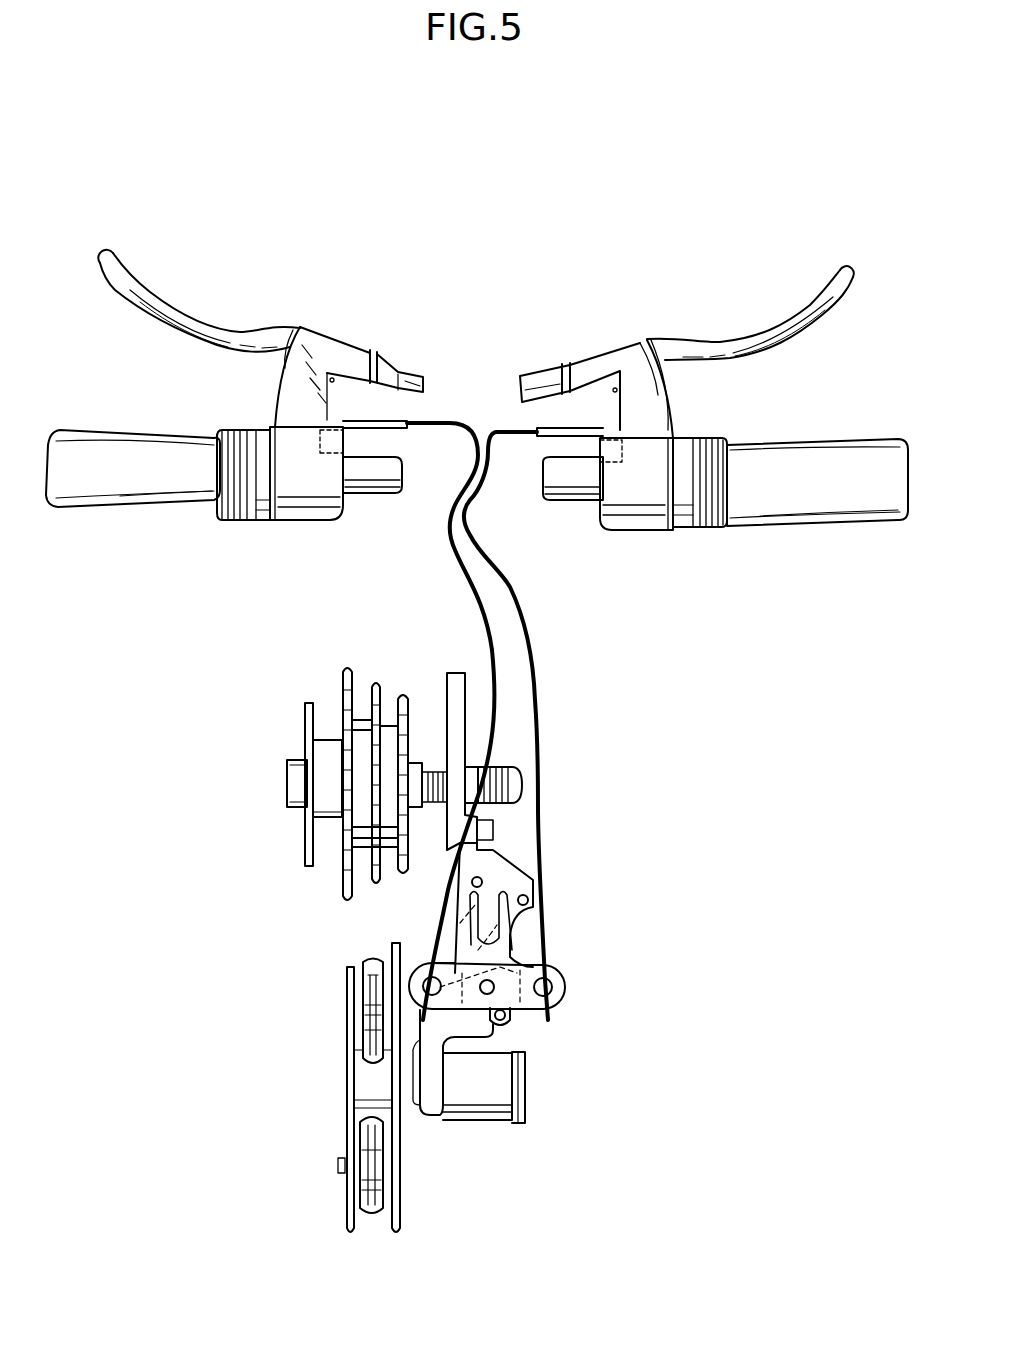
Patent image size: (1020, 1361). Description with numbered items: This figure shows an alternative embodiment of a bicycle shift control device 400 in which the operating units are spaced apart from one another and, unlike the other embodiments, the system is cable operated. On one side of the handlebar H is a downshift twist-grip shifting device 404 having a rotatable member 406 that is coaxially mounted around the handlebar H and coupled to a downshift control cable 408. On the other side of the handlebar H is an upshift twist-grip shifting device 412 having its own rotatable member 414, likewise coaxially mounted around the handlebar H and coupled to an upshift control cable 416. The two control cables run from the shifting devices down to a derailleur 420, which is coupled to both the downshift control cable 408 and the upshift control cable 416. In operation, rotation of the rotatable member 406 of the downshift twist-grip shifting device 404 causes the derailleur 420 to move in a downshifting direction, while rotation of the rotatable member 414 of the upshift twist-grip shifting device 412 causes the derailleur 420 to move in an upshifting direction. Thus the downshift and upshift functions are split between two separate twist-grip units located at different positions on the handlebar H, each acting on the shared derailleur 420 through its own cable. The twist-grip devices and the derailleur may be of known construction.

The bicycle shift control device 400 is at (480, 257).
The downshift twist-grip shifting device 404 is at (233, 418).
The rotatable member 406 is at (243, 517).
The downshift control cable 408 is at (441, 429).
The upshift twist-grip shifting device 412 is at (693, 433).
The rotatable member 414 is at (693, 520).
The upshift control cable 416 is at (520, 443).
The derailleur 420 is at (570, 993).
The handlebar H is at (368, 477).